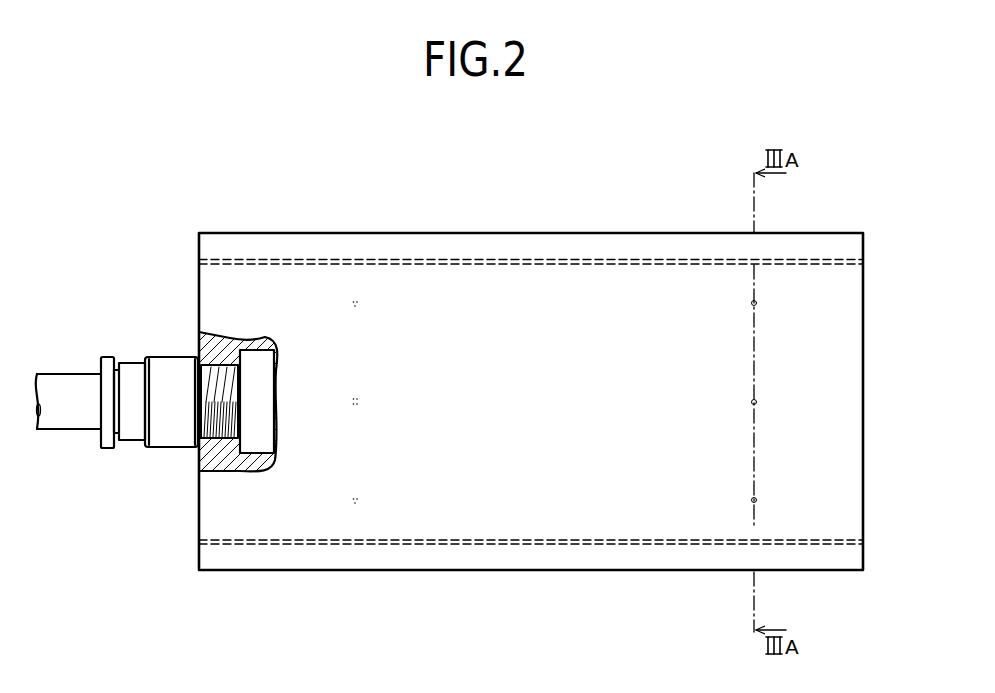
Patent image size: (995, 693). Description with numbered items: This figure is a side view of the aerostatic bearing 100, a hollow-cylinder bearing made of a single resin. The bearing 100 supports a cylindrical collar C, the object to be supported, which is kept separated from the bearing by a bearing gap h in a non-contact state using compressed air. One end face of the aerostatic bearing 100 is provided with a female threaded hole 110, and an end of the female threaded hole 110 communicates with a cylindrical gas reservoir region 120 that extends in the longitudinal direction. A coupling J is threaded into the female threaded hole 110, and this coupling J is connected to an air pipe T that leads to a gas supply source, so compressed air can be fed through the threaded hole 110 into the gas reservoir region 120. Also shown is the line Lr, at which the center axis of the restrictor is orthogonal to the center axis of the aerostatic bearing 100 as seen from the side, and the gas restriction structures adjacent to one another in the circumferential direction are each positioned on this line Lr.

The aerostatic bearing 100 is at (196, 458).
The female threaded hole 110 is at (222, 368).
The cylindrical gas reservoir region 120 is at (262, 352).
The air pipe T is at (62, 436).
The coupling J is at (130, 366).
The collar C is at (500, 247).
The bearing gap h is at (866, 262).
The line Lr is at (756, 368).